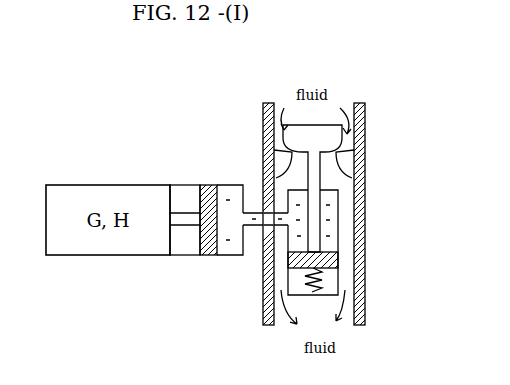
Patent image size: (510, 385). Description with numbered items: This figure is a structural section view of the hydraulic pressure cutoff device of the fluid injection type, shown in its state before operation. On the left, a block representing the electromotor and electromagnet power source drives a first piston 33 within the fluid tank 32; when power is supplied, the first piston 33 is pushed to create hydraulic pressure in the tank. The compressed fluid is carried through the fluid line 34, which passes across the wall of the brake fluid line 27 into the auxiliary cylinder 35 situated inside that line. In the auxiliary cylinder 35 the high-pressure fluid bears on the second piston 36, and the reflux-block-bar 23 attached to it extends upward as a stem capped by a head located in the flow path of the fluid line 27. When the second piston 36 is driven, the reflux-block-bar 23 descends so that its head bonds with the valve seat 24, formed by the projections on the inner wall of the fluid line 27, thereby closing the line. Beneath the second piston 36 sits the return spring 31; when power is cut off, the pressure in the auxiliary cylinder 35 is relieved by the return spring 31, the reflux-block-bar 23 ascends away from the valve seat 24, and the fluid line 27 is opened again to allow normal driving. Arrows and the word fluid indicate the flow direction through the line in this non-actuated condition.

The reflux-block-bar 23 is at (332, 128).
The valve seat 24 is at (350, 163).
The fluid line 27 is at (268, 320).
The return spring 31 is at (345, 298).
The fluid tank 32 is at (228, 200).
The first piston 33 is at (210, 252).
The fluid line 34 is at (253, 237).
The auxiliary cylinder 35 is at (340, 284).
The second piston 36 is at (335, 256).